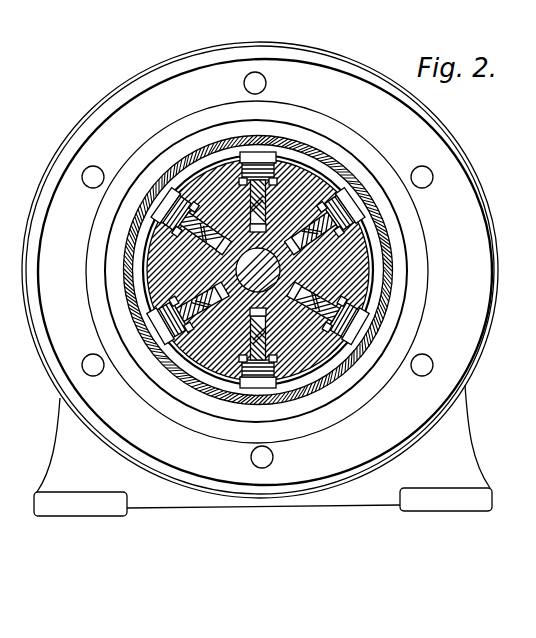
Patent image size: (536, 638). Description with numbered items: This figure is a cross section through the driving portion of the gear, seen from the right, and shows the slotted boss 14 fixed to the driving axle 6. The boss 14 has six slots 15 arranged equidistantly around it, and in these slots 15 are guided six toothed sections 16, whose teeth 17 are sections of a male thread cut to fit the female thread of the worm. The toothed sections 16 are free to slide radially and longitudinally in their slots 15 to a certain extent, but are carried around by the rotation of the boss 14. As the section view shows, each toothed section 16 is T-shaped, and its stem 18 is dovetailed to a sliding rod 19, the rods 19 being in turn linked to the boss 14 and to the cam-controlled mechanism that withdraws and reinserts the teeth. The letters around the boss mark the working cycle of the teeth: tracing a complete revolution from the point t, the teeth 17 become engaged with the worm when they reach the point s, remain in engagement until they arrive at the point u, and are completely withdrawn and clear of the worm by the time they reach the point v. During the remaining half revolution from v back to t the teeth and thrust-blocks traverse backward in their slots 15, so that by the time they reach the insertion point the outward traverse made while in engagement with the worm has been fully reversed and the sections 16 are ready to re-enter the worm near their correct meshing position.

The axle 6 is at (205, 347).
The slotted boss 14 is at (155, 275).
The slots 15 is at (342, 178).
The toothed sections 16 is at (172, 341).
The teeth 17 is at (164, 314).
The stems 18 is at (180, 335).
The sliding rods 19 is at (215, 375).
The engagement point s is at (260, 270).
The starting point t is at (150, 228).
The end-of-engagement point u is at (257, 272).
The clearance point v is at (265, 271).